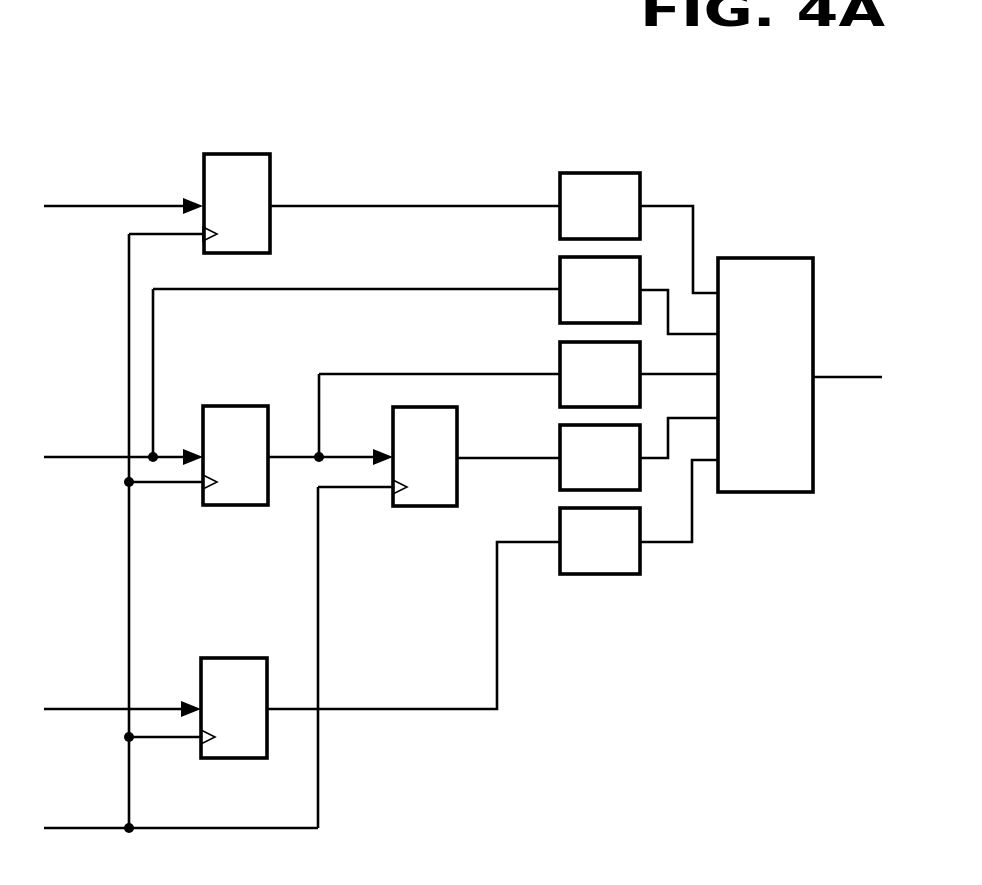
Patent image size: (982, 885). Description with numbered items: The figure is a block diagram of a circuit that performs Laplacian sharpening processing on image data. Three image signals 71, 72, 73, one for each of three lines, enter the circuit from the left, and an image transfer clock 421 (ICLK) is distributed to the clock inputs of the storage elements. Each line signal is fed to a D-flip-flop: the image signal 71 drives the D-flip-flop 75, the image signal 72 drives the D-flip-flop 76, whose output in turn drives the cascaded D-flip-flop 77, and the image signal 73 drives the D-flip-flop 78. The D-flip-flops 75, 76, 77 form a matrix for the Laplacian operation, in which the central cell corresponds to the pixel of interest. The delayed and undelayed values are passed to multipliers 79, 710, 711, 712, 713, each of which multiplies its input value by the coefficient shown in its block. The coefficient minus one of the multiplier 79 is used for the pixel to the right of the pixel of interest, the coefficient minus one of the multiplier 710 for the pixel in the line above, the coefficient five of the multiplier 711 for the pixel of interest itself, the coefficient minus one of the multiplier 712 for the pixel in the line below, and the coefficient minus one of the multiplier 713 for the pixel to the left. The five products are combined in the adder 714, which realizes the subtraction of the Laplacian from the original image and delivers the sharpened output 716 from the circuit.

The image signal 71 is at (79, 206).
The image signal 72 is at (76, 457).
The image signal 73 is at (75, 709).
The image transfer clock 421 is at (76, 828).
The D-flip-flop 75 is at (238, 154).
The D-flip-flop 76 is at (238, 406).
The D-flip-flop 77 is at (450, 506).
The D-flip-flop 78 is at (238, 658).
The multiplier 79 is at (560, 181).
The multiplier 710 is at (560, 267).
The multiplier 711 is at (560, 352).
The multiplier 712 is at (560, 439).
The multiplier 713 is at (560, 522).
The adder 714 is at (785, 258).
The output signal line 716 is at (852, 377).